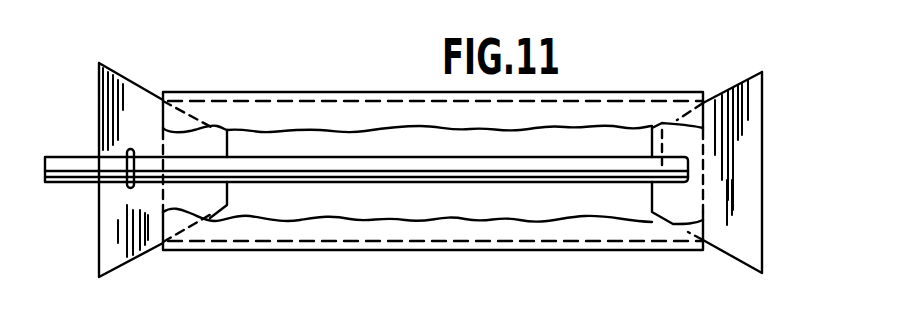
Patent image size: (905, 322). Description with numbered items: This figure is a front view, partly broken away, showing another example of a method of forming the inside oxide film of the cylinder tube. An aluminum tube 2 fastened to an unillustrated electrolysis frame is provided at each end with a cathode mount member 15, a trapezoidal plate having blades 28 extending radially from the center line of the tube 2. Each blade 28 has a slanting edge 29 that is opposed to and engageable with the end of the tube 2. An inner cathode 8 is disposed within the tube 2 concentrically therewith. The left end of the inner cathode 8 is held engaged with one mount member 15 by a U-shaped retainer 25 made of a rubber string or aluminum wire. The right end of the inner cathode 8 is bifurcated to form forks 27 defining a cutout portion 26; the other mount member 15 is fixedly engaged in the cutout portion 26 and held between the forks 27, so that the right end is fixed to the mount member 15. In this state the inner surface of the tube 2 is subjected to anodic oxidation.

The aluminum tube 2 is at (270, 91).
The inner cathode 8 is at (318, 170).
The cathode mount member 15 is at (105, 231).
The U-shaped retainer 25 is at (127, 167).
The cutout portion 26 is at (658, 172).
The forks 27 is at (679, 163).
The blade 28 is at (128, 87).
The slanting edge 29 is at (155, 92).